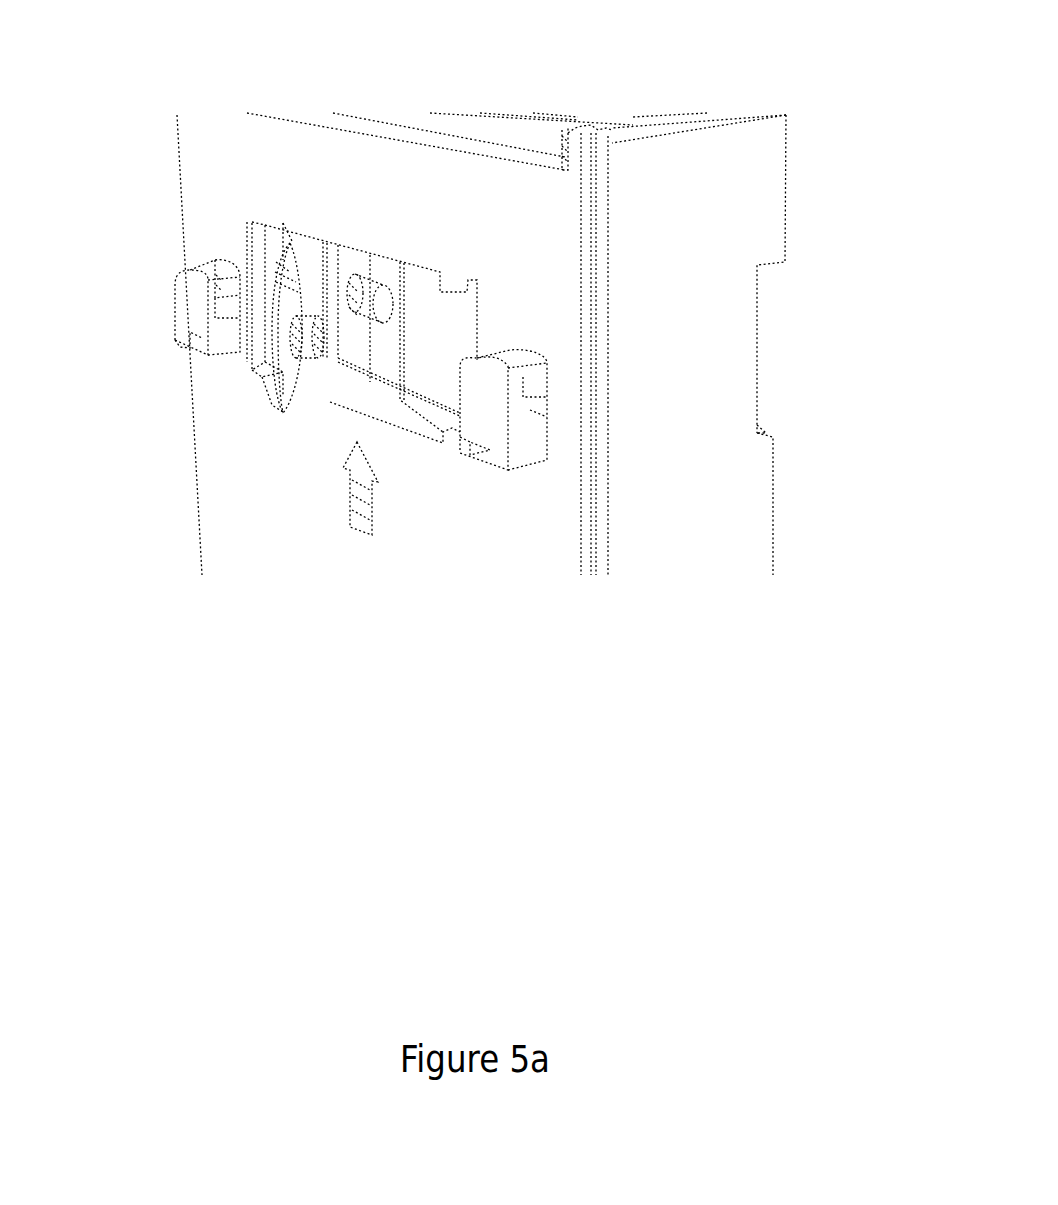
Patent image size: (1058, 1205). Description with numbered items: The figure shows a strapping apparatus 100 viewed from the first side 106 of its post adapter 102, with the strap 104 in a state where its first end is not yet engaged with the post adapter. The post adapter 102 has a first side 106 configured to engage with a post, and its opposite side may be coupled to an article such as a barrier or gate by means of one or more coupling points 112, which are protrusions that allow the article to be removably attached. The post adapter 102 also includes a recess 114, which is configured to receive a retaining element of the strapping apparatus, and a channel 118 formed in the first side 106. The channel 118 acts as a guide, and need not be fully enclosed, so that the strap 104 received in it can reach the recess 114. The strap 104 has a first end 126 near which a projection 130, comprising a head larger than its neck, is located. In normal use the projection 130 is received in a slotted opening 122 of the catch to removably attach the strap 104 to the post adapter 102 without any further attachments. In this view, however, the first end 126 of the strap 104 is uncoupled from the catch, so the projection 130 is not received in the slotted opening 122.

The strapping apparatus 100 is at (112, 168).
The post adapter 102 is at (787, 188).
The strap 104 is at (293, 247).
The first side 106 is at (130, 511).
The coupling points 112 is at (177, 310).
The recess 114 is at (447, 333).
The channel 118 is at (762, 390).
The slotted opening 122 is at (374, 302).
The first end 126 is at (265, 390).
The projection 130 is at (313, 352).